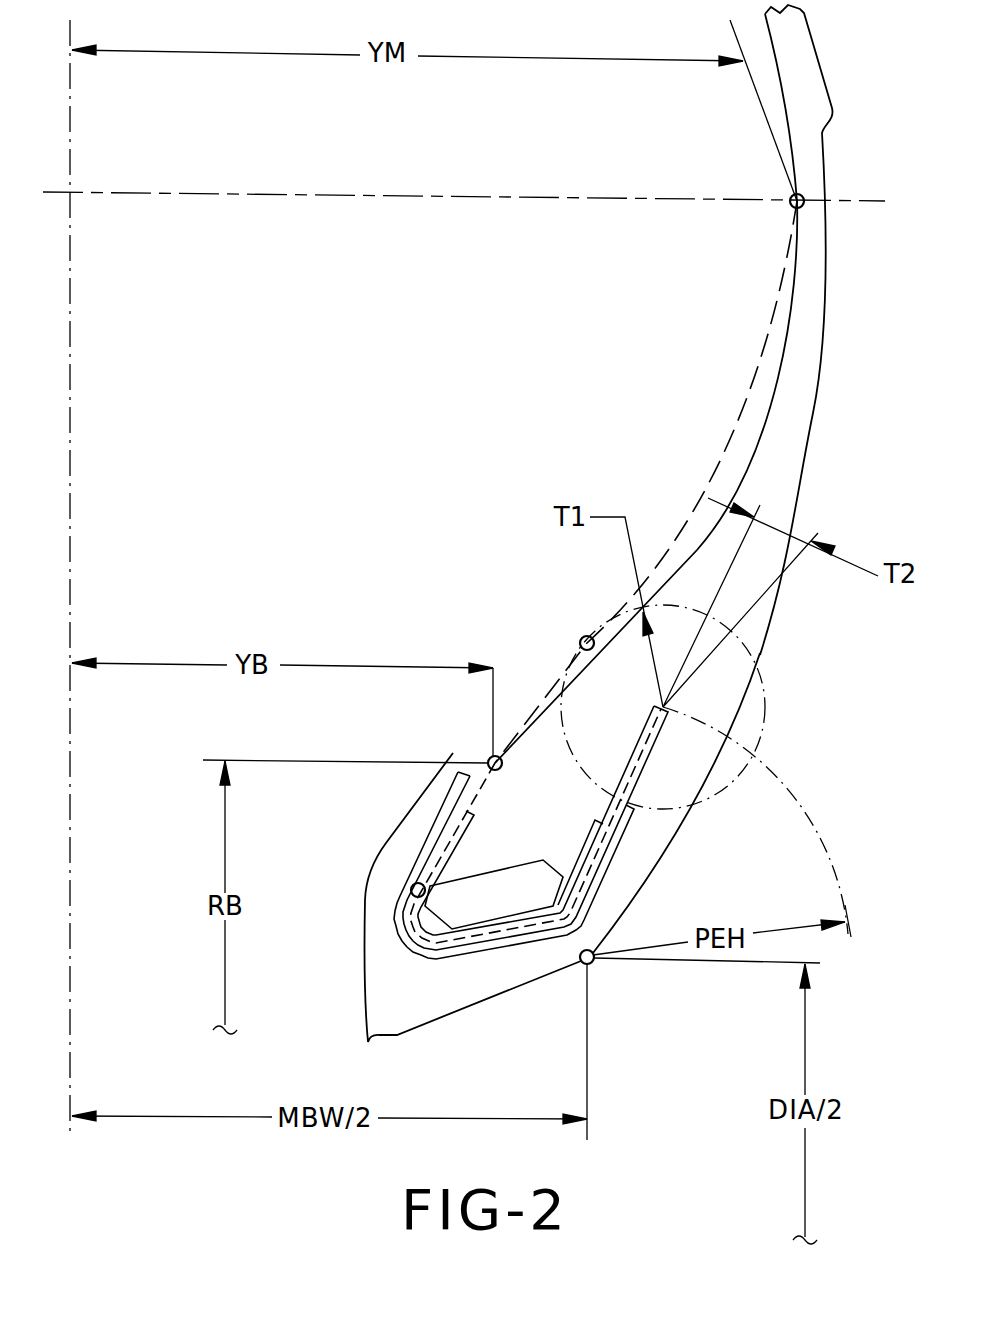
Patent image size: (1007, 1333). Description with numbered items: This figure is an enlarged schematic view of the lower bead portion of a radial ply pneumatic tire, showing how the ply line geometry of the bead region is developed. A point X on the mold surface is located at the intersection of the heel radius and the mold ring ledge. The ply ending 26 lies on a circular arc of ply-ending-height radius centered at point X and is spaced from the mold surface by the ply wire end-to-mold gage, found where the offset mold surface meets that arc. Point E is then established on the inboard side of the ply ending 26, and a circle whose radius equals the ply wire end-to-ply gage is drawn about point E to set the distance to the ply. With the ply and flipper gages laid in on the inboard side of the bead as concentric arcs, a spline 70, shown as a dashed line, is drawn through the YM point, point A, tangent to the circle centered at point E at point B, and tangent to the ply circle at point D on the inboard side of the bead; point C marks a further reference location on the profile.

The spline 70 is at (550, 687).
The ply ending 26 is at (667, 707).
The YM point A is at (791, 208).
The tangent point on circle centered at E B is at (586, 636).
The point C is at (490, 759).
The tangent point on ply circle D is at (413, 886).
The point E is at (665, 705).
The point X is at (594, 962).